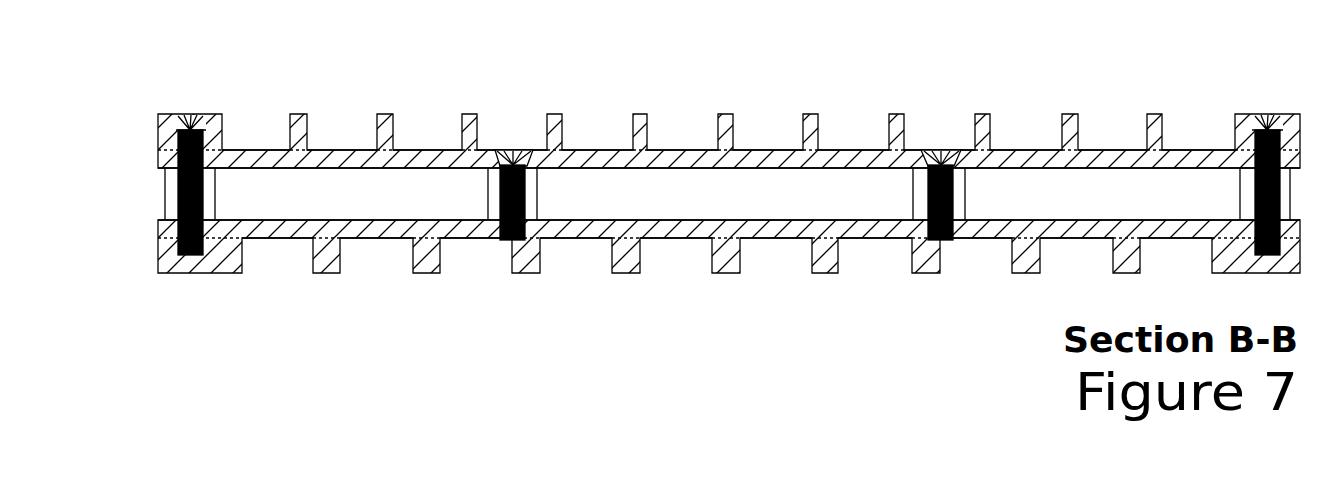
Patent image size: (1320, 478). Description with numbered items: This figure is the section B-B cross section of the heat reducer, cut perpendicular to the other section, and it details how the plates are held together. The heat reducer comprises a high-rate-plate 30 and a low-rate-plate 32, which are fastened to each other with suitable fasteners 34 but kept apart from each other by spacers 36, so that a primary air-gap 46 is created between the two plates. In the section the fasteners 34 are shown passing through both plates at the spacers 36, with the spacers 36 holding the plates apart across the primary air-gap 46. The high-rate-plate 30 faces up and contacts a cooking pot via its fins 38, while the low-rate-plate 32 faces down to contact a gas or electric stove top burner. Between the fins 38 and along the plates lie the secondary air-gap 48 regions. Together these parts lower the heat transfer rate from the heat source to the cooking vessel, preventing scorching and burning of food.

The high-rate-plate 30 is at (492, 99).
The low-rate-plate 32 is at (440, 296).
The fastener 34 is at (172, 108).
The spacer 36 is at (155, 194).
The fins 38 is at (898, 104).
The primary air-gap 46 is at (800, 194).
The secondary air-gap 48 is at (679, 134).